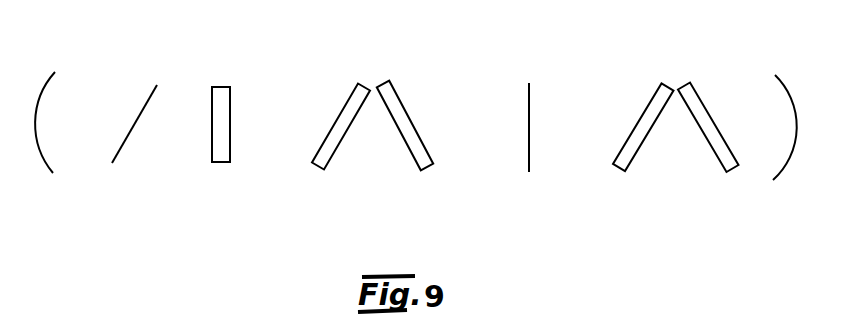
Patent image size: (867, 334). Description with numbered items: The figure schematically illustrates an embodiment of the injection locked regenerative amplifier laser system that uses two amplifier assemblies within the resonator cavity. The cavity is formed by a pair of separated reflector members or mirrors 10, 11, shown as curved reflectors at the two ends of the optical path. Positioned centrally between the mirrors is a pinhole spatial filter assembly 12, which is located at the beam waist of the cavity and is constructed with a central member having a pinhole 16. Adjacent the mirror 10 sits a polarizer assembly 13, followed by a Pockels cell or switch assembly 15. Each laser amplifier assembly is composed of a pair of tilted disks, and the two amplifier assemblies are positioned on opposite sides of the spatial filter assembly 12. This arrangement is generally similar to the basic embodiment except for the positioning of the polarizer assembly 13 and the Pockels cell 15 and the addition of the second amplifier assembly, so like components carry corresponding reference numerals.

The reflector member or mirror 10 is at (37, 122).
The reflector member or mirror 11 is at (793, 153).
The pinhole spatial filter assembly 12 is at (528, 107).
The polarizer assembly 13 is at (142, 105).
The Pockels cell or switch assembly 15 is at (230, 110).
The pinhole 16 is at (529, 123).